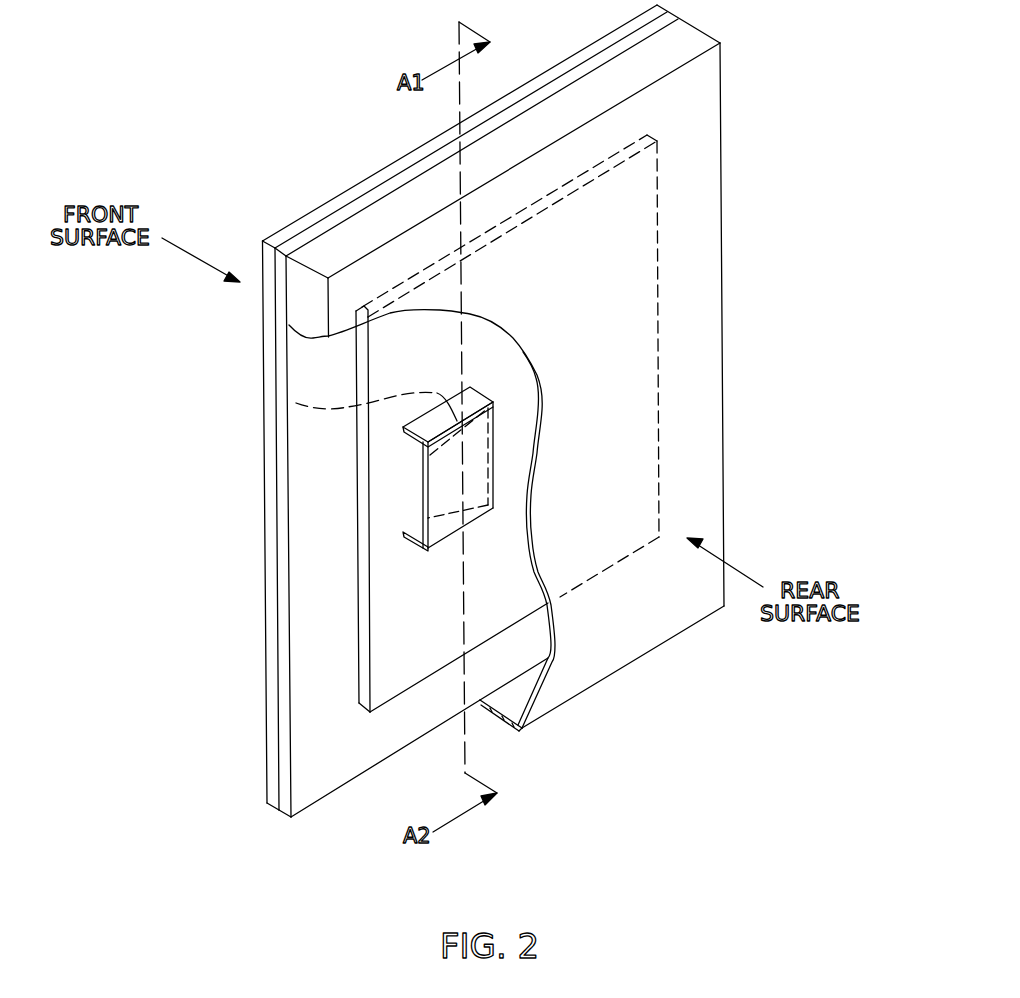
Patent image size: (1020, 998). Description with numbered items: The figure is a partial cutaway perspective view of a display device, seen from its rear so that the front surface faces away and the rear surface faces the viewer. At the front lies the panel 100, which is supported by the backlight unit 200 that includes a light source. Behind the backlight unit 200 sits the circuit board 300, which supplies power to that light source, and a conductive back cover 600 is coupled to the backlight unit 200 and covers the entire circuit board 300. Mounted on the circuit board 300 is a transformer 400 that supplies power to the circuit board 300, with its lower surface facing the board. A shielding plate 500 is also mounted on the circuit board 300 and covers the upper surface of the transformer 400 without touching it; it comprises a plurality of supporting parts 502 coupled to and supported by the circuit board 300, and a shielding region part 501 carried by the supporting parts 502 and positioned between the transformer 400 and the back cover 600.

The panel 100 is at (275, 793).
The backlight unit 200 is at (283, 805).
The circuit board 300 is at (387, 680).
The transformer 400 is at (296, 403).
The shielding plate 500 is at (304, 499).
The shielding region part 501 is at (445, 533).
The supporting parts 502 is at (407, 535).
The conductive back cover 600 is at (643, 635).